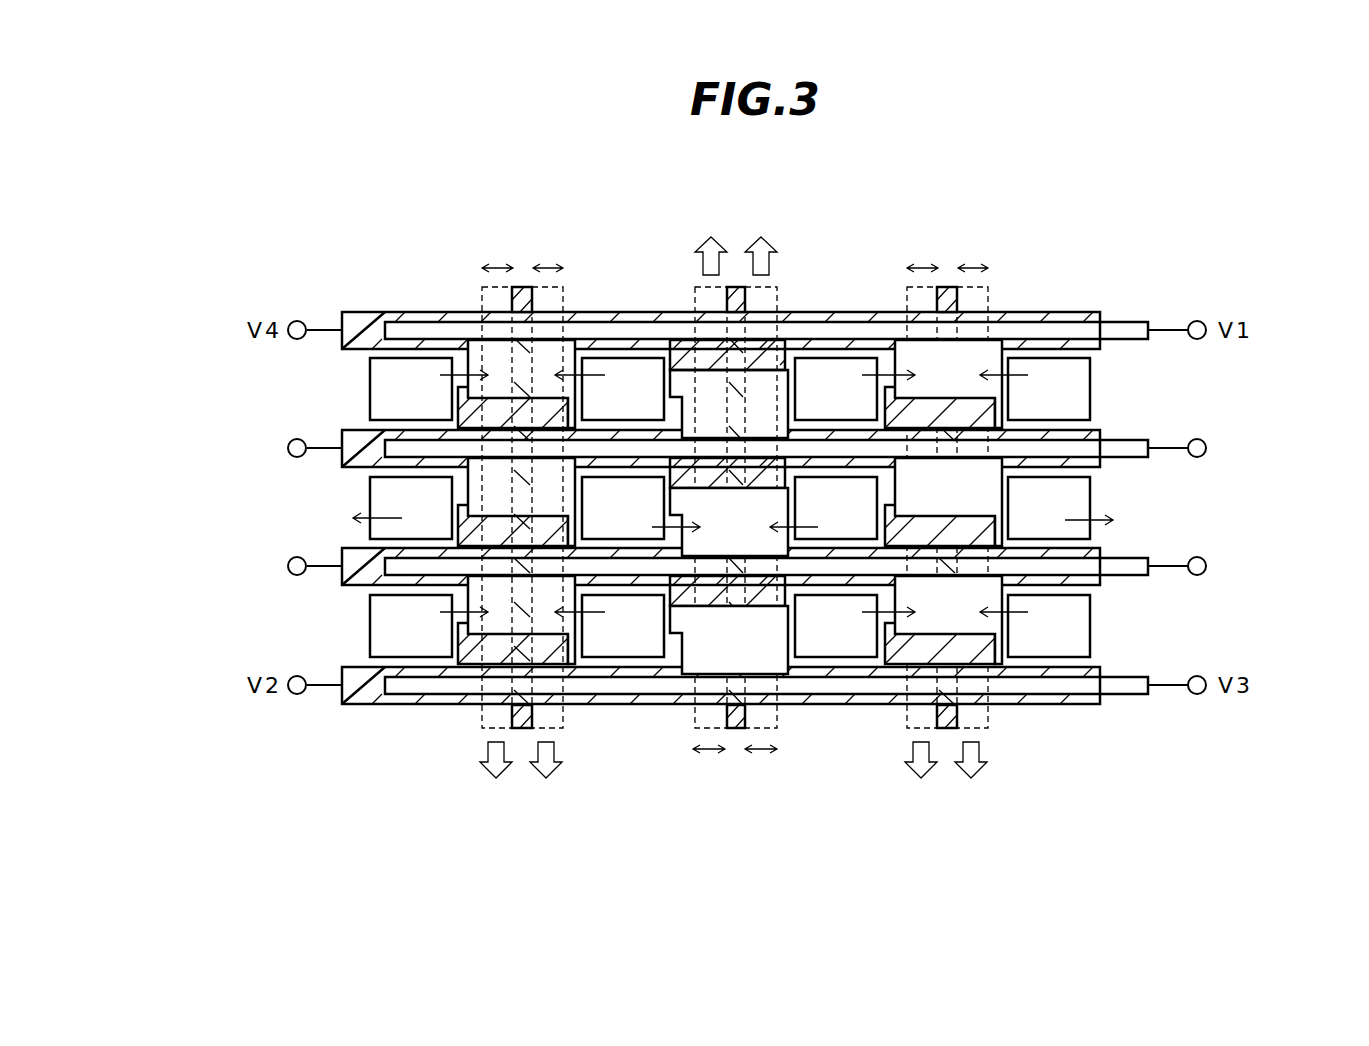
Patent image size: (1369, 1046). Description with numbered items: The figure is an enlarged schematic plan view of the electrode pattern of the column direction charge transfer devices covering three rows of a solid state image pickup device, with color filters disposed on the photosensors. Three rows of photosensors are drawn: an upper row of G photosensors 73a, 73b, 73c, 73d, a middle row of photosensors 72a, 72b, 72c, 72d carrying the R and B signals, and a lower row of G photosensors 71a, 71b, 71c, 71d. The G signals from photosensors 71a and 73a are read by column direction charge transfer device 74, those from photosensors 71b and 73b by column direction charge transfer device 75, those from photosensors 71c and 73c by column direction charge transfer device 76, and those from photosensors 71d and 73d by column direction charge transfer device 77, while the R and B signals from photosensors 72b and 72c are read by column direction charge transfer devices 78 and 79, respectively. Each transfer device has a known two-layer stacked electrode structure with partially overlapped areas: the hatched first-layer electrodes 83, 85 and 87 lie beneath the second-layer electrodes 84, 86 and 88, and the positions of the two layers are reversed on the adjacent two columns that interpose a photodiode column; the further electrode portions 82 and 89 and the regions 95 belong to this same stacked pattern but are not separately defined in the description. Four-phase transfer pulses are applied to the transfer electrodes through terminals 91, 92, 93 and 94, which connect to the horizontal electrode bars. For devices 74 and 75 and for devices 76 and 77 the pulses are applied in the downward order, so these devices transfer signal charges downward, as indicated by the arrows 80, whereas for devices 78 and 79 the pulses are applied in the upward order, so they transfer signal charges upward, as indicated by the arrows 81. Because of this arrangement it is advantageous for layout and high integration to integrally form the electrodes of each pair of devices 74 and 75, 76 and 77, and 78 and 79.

The photosensor 71a is at (368, 642).
The photosensor 71b is at (648, 650).
The photosensor 71c is at (857, 643).
The photosensor 71d is at (1075, 637).
The second pixel electrode (B) 72a is at (368, 513).
The photosensor 72b is at (600, 518).
The photosensor 72c is at (817, 520).
The second pixel electrode (R) 72d is at (1058, 495).
The photosensor 73a is at (383, 385).
The photosensor 73b is at (617, 365).
The photosensor 73c is at (862, 372).
The photosensor 73d is at (1072, 380).
The column direction charge transfer device 74 is at (498, 262).
The column direction charge transfer device 75 is at (552, 262).
The column direction charge transfer device 76 is at (927, 262).
The column direction charge transfer device 77 is at (970, 262).
The column direction charge transfer device 78 is at (707, 757).
The column direction charge transfer device 79 is at (760, 757).
The movement direction 80 is at (487, 778).
The movement direction 81 is at (772, 240).
The electrode portion 82 is at (770, 660).
The first-layer electrode 83 is at (978, 645).
The second-layer electrode 84 is at (1007, 603).
The first-layer electrode 85 is at (1000, 528).
The second-layer electrode 86 is at (998, 480).
The first-layer electrode 87 is at (1000, 414).
The second-layer electrode 88 is at (975, 352).
The connection portion 89 is at (787, 350).
The terminal 91 is at (1257, 565).
The terminal 92 is at (238, 445).
The terminal 93 is at (1260, 455).
The terminal 94 is at (240, 558).
The thin film transistor 95 is at (527, 355).